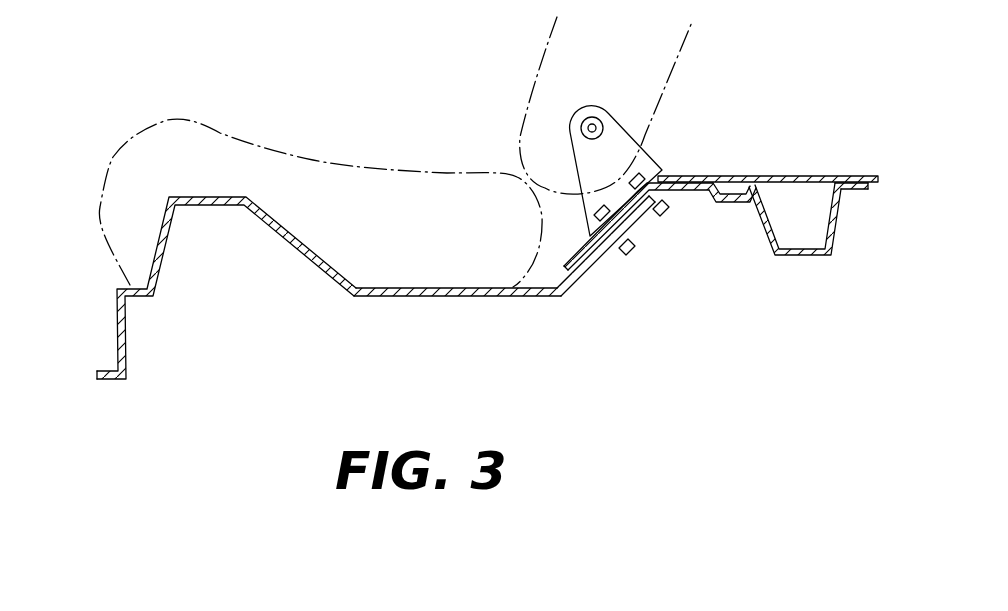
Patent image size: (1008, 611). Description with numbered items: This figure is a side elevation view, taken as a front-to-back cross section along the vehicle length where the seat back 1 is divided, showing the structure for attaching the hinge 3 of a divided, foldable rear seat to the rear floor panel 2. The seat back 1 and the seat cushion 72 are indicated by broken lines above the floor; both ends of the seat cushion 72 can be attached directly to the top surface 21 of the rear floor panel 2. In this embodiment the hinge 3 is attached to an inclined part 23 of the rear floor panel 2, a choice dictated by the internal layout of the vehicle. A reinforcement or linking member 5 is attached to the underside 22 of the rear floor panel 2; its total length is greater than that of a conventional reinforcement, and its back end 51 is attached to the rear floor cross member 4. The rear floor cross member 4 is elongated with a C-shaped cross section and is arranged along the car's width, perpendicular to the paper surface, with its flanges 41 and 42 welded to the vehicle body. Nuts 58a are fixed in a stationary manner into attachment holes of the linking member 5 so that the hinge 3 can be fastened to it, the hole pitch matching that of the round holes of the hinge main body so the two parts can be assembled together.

The seat back 1 is at (562, 70).
The rear floor panel 2 is at (376, 287).
The top surface 21 is at (412, 287).
The underside 22 is at (387, 295).
The inclined part 23 is at (577, 265).
The hinge 3 is at (612, 137).
The rear floor cross member 4 is at (823, 247).
The flange 41 is at (757, 177).
The flange 42 is at (853, 188).
The linking member 5 is at (667, 229).
The back end 51 is at (738, 205).
The nuts 58a is at (665, 238).
The seat cushion 72 is at (208, 137).